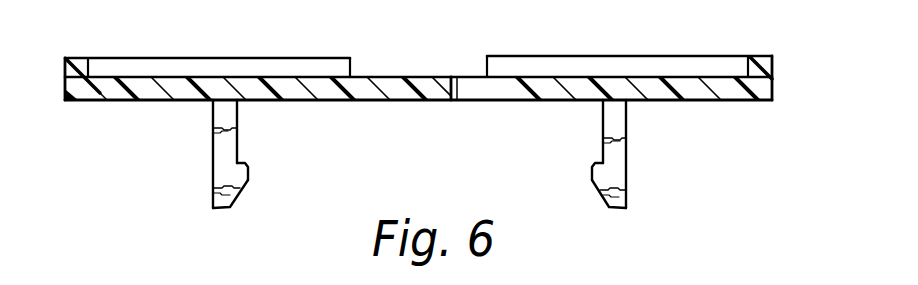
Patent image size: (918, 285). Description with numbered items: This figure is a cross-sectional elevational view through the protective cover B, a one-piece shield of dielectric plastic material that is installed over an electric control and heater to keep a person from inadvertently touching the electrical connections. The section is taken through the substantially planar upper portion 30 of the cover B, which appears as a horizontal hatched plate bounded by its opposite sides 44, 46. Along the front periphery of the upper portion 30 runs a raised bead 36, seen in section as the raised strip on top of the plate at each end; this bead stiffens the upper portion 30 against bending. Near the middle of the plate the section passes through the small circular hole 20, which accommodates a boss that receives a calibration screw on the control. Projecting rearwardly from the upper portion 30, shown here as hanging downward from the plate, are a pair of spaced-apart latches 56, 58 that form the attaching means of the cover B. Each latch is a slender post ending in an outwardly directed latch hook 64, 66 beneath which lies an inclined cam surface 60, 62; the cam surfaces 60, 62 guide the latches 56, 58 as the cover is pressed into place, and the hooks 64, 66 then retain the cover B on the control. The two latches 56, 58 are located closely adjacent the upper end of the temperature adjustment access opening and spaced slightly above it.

The small circular hole 20 is at (463, 77).
The upper portion 30 is at (393, 92).
The raised bead 36 is at (78, 58).
The side of upper portion 44 is at (63, 79).
The side of upper portion 46 is at (774, 78).
The latch 56 is at (212, 172).
The latch 58 is at (627, 167).
The inclined cam surface 60 is at (243, 186).
The inclined cam surface 62 is at (600, 192).
The latch hook 64 is at (240, 162).
The latch hook 66 is at (595, 162).
The protective cover B is at (716, 101).